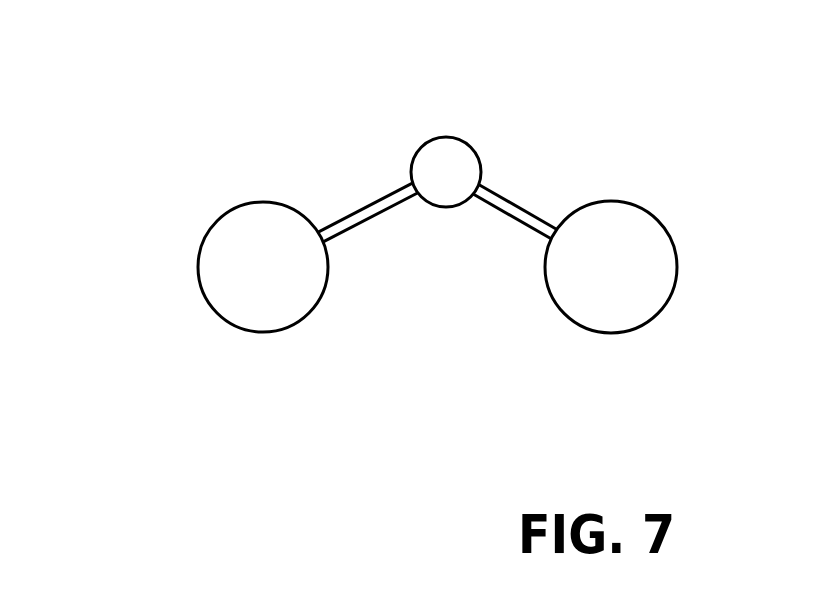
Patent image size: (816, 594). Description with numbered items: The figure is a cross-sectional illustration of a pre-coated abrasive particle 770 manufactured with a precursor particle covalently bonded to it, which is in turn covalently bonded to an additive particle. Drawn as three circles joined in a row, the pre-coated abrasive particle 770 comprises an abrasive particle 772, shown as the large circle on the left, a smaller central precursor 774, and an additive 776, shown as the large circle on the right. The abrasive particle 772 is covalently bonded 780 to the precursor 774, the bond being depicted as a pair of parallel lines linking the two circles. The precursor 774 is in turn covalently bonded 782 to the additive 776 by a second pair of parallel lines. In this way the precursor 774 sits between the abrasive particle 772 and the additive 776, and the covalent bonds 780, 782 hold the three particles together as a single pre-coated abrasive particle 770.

The pre-coated abrasive particle 770 is at (326, 64).
The abrasive particle 772 is at (207, 300).
The precursor 774 is at (473, 145).
The additive 776 is at (658, 217).
The covalent bond 780 is at (347, 203).
The covalent bond 782 is at (500, 192).